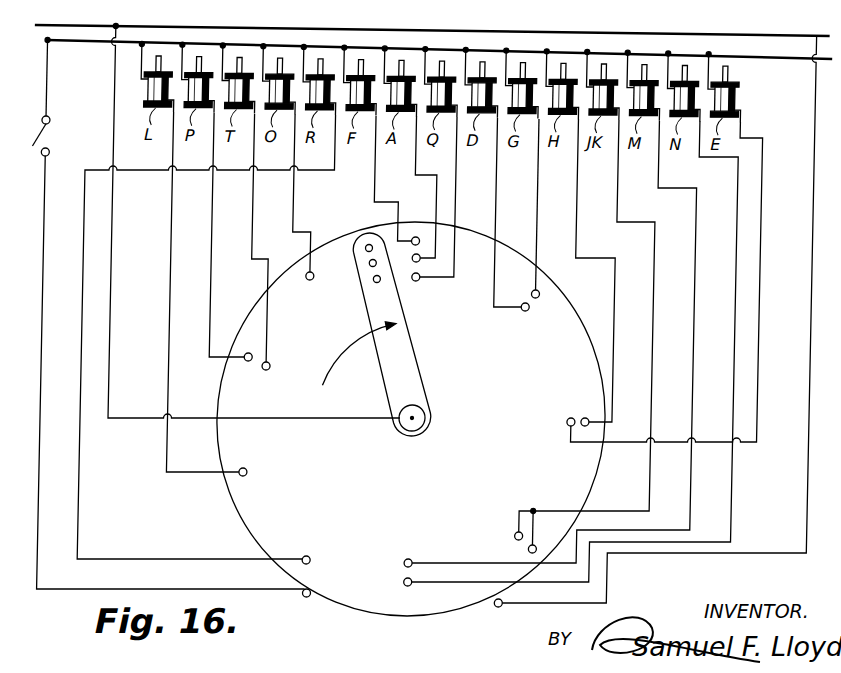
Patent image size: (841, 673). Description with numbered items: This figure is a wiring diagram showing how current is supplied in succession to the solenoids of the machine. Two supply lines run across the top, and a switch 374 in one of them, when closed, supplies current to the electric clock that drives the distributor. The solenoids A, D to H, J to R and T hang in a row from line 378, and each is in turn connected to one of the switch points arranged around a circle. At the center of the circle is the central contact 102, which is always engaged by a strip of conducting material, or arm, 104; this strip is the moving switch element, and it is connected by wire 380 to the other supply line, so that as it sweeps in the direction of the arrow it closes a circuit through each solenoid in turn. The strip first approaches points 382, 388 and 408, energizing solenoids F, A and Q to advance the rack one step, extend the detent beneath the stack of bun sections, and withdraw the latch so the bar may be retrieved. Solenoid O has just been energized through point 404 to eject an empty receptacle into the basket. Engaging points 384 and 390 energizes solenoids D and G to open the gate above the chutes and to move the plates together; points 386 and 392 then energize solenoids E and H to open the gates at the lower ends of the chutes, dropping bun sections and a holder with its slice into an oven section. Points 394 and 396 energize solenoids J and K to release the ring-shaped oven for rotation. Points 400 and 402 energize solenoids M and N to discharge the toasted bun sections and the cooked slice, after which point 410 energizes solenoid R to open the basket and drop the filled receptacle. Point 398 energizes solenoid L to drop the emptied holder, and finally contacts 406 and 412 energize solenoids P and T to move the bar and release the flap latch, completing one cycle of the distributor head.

The central contact 102 is at (410, 426).
The conducting strip 104 is at (405, 373).
The switch 374 is at (34, 123).
The line 378 is at (66, 42).
The wire 380 is at (303, 420).
The contact point 382 is at (411, 262).
The contact point 384 is at (522, 311).
The contact point 386 is at (567, 423).
The contact point 388 is at (410, 237).
The contact point 390 is at (537, 292).
The contact point 392 is at (584, 418).
The contact point 394 is at (531, 550).
The contact point 396 is at (517, 535).
The contact point 398 is at (247, 476).
The contact point 400 is at (409, 559).
The contact point 402 is at (409, 586).
The contact point 404 is at (308, 280).
The contact point 406 is at (246, 361).
The contact point 408 is at (417, 280).
The contact point 410 is at (313, 561).
The contact point 412 is at (269, 366).